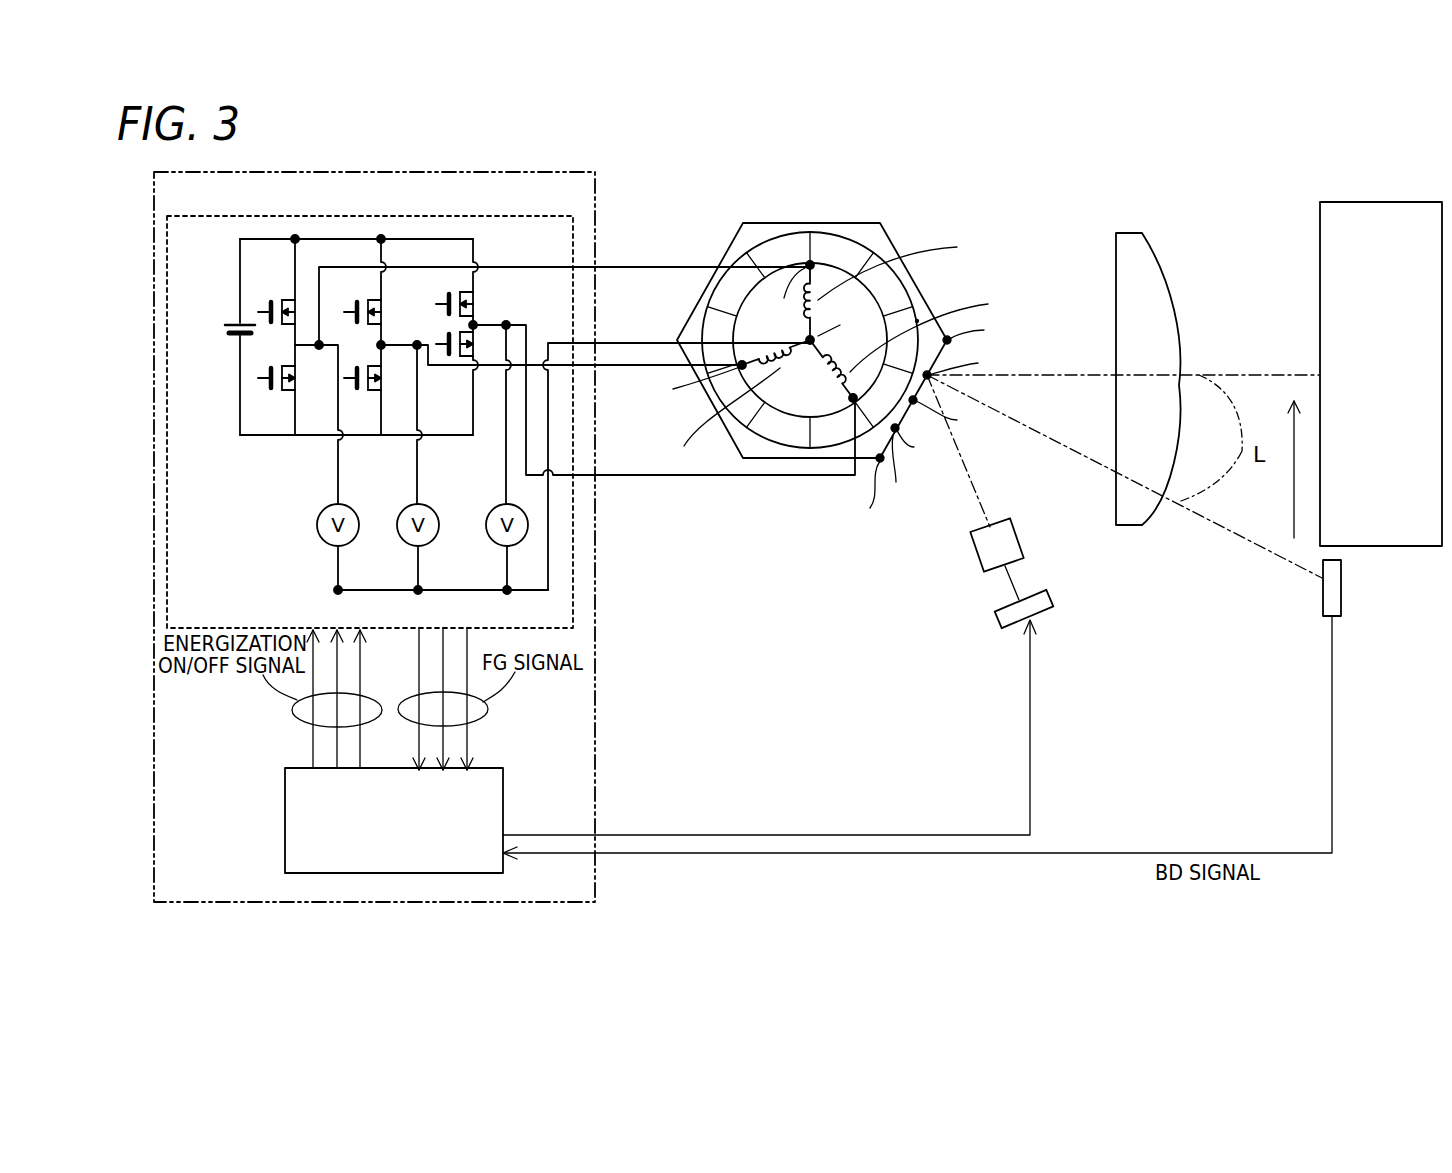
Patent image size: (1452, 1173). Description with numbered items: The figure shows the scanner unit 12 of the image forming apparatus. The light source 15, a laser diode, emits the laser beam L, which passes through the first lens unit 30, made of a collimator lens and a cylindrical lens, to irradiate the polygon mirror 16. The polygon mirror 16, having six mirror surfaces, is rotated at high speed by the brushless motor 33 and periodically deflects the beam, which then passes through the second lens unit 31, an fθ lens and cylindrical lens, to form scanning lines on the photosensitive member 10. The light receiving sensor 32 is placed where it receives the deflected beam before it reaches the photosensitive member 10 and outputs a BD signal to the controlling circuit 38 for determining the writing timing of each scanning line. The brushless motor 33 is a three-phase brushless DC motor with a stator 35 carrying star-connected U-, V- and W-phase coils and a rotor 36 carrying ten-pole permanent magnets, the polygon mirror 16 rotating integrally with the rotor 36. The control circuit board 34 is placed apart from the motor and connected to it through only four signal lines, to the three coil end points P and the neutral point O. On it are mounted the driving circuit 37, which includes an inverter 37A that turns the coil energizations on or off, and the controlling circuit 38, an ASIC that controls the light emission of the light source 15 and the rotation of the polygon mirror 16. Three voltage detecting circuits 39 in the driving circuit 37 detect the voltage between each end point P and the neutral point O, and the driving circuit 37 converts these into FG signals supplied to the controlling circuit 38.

The photosensitive member 10 is at (1386, 215).
The scanner unit 12 is at (1114, 180).
The light source 15 is at (1052, 602).
The polygon mirror 16 is at (857, 336).
The first lens unit 30 is at (1013, 543).
The second lens unit 31 is at (1129, 238).
The light receiving sensor 32 is at (1345, 592).
The brushless motor 33 is at (760, 236).
The control circuit board 34 is at (441, 172).
The stator 35 is at (825, 283).
The rotor 36 is at (918, 322).
The driving circuit 37 is at (294, 216).
The inverter 37A is at (349, 239).
The controlling circuit 38 is at (433, 873).
The voltage detecting circuit 39 is at (332, 505).